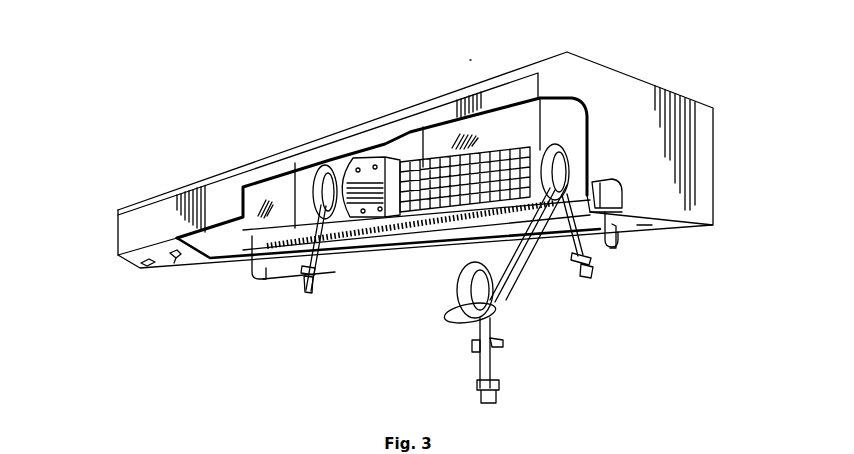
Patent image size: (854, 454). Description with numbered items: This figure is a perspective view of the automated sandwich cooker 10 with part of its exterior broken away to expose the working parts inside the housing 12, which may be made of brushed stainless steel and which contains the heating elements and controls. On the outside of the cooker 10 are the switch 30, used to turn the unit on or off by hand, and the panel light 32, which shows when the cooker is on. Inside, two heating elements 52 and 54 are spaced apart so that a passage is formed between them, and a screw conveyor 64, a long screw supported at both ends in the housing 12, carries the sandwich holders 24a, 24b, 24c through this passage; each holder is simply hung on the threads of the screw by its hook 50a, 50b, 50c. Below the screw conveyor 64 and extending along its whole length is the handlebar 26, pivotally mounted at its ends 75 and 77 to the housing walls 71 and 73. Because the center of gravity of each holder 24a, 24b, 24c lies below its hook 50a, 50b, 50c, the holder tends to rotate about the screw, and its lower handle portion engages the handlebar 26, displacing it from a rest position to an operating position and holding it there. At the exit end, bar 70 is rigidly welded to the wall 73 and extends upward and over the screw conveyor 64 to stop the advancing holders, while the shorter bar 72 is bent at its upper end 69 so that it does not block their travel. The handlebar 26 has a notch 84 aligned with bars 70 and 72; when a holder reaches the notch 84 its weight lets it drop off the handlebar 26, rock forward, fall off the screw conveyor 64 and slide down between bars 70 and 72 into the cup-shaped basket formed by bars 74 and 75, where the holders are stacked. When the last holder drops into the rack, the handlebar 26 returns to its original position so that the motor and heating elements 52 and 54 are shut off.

The automated sandwich cooker 10 is at (478, 62).
The housing 12 is at (122, 232).
The sandwich holder 24a is at (303, 294).
The sandwich holder 24b is at (594, 284).
The sandwich holder 24c is at (506, 394).
The handlebar 26 is at (397, 270).
The switch 30 is at (172, 258).
The panel light 32 is at (145, 270).
The hook 50a is at (297, 231).
The hook 50b is at (615, 240).
The hook 50c is at (473, 354).
The heating element 52 is at (488, 157).
The heating element 54 is at (362, 152).
The screw conveyor 64 is at (363, 242).
The upper end of bar 72 69 is at (534, 150).
The bar 70 is at (536, 256).
The housing wall 71 is at (225, 245).
The bar 72 is at (519, 277).
The wall 73 is at (658, 204).
The bar 74 is at (447, 303).
The bar / handlebar end 75 is at (250, 262).
The handlebar end 77 is at (630, 212).
The notch 84 is at (598, 245).